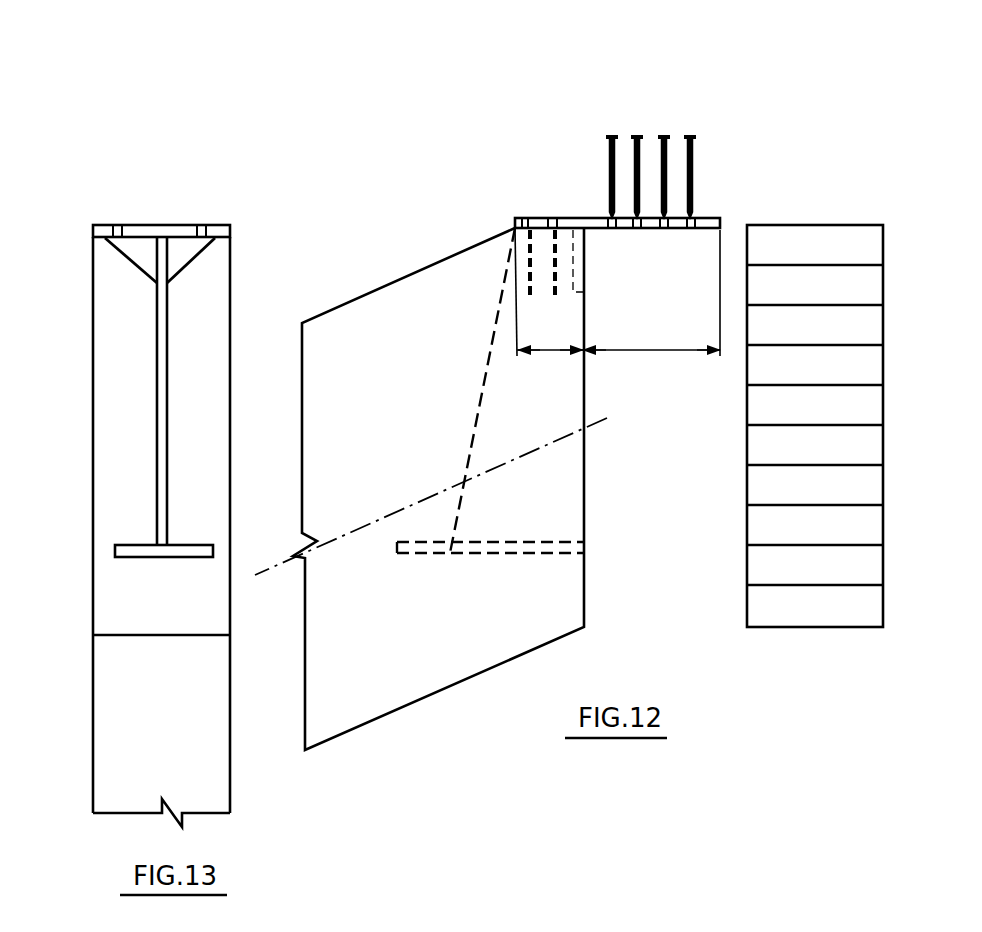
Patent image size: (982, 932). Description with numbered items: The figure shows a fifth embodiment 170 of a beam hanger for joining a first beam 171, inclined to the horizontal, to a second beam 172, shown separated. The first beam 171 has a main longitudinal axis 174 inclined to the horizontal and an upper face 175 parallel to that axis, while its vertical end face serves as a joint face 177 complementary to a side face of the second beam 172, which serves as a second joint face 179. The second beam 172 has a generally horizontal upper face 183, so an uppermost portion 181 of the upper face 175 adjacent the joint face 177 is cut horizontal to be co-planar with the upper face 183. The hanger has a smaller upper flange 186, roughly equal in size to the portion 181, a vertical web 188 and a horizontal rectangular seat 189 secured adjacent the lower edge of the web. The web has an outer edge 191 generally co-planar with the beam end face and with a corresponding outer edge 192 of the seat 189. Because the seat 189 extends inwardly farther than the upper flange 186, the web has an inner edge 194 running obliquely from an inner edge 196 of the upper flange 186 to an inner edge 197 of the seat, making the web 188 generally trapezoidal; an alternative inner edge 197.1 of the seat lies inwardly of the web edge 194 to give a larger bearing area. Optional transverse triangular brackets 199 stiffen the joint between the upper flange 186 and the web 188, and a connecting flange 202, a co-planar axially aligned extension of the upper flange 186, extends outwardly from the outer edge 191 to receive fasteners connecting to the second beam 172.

In FIG. 13, the fifth embodiment of hanger 170 is at (197, 183).
In FIG. 12, the fifth embodiment of hanger 170 is at (581, 139).
In FIG. 13, the first beam 171 is at (240, 795).
In FIG. 12, the first beam 171 is at (504, 663).
In FIG. 12, the second beam 172 is at (873, 630).
In FIG. 12, the main longitudinal axis 174 is at (426, 496).
In FIG. 12, the upper face 175 is at (389, 285).
In FIG. 12, the joint face 177 is at (586, 600).
In FIG. 12, the second joint face 179 is at (747, 400).
In FIG. 12, the uppermost portion of upper face 181 is at (537, 220).
In FIG. 12, the upper face of second beam 183 is at (818, 225).
In FIG. 13, the upper flange 186 is at (198, 222).
In FIG. 12, the upper flange 186 is at (550, 358).
In FIG. 13, the web 188 is at (159, 412).
In FIG. 12, the web 188 is at (553, 468).
In FIG. 13, the seat 189 is at (211, 559).
In FIG. 12, the seat 189 is at (577, 556).
In FIG. 12, the outer edge of web 191 is at (587, 490).
In FIG. 12, the outer edge of seat 192 is at (586, 546).
In FIG. 12, the inner edge of web 194 is at (478, 422).
In FIG. 12, the inner edge of upper flange 196 is at (515, 228).
In FIG. 12, the inner edge of seat 197 is at (452, 556).
In FIG. 12, the alternative inner edge of seat 197.1 is at (397, 556).
In FIG. 13, the triangular brackets 199 is at (185, 268).
In FIG. 12, the triangular brackets 199 is at (587, 263).
In FIG. 13, the connecting flange 202 is at (159, 231).
In FIG. 12, the connecting flange 202 is at (641, 352).